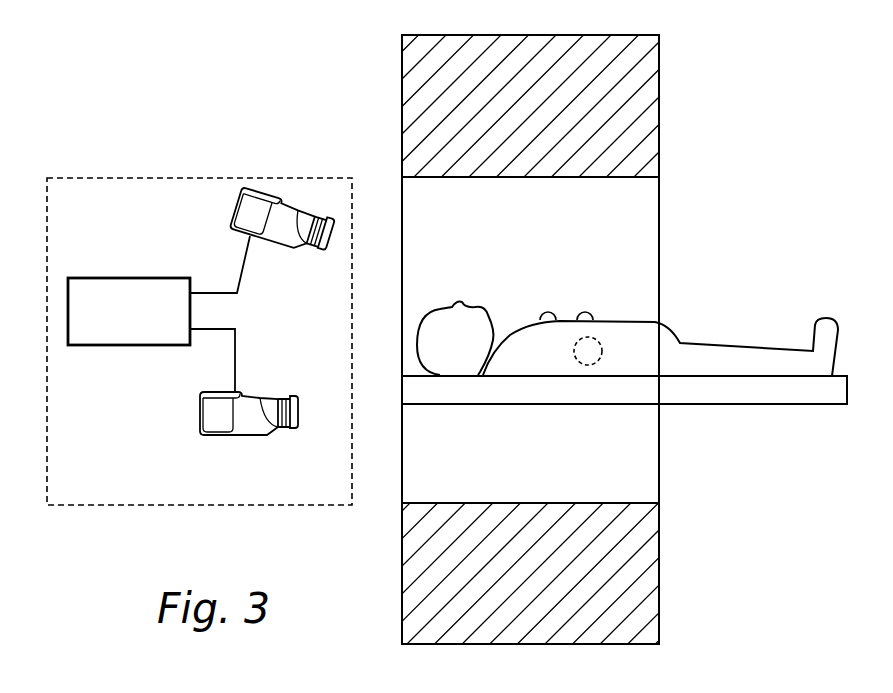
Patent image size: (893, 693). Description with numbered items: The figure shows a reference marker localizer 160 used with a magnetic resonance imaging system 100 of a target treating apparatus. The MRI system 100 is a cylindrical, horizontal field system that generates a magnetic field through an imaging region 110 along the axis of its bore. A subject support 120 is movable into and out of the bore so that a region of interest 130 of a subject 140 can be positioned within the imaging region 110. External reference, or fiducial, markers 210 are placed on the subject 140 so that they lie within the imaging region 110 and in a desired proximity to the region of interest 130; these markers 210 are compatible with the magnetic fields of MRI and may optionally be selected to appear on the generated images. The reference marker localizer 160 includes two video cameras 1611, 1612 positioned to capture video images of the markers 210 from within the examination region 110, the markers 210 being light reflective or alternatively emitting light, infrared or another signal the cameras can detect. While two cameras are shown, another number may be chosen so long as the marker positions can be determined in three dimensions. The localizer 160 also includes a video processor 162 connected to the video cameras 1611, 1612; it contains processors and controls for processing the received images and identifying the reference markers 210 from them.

The magnetic resonance imaging system 100 is at (661, 107).
The imaging region 110 is at (603, 224).
The subject support 120 is at (723, 404).
The region of interest 130 is at (602, 352).
The subject 140 is at (750, 345).
The reference marker localizer 160 is at (182, 178).
The video camera 1611 is at (232, 215).
The video camera 1612 is at (244, 437).
The video processor 162 is at (135, 346).
The fiducial markers 210 is at (581, 305).